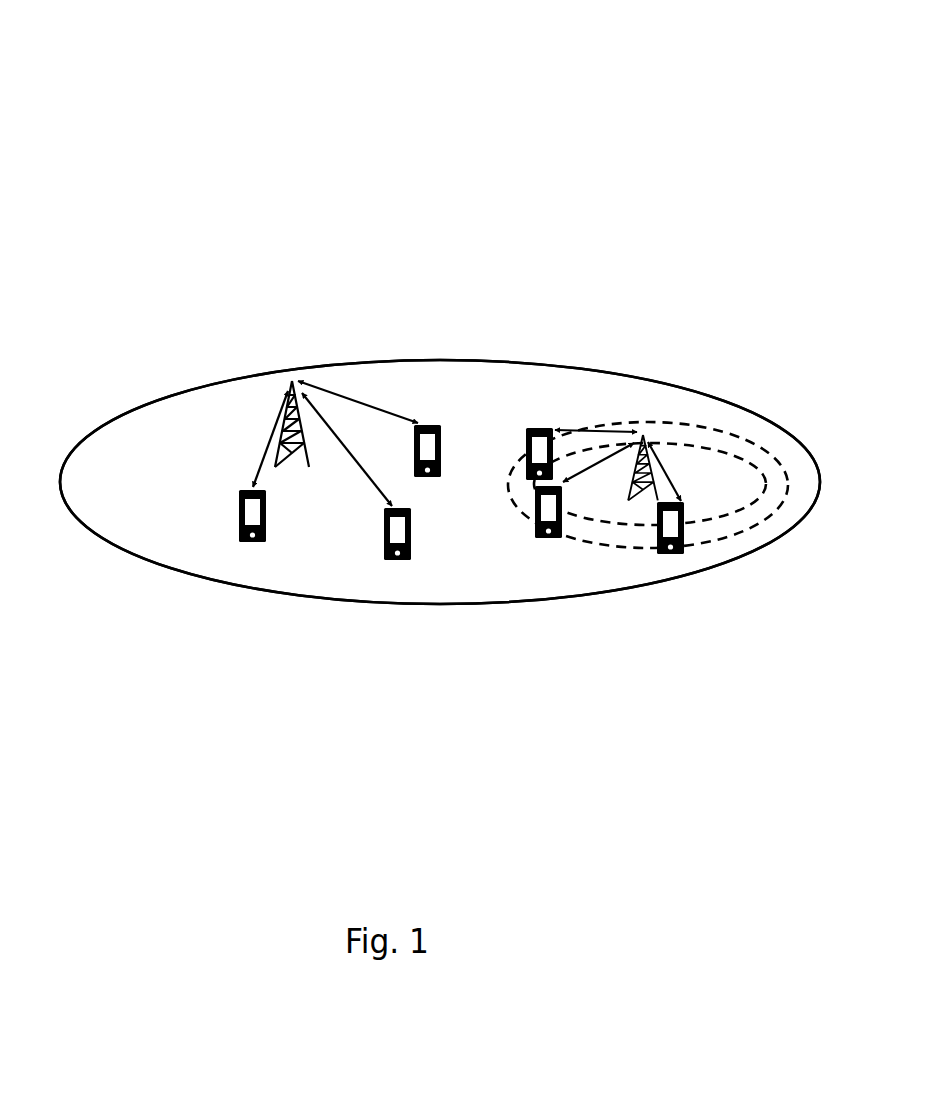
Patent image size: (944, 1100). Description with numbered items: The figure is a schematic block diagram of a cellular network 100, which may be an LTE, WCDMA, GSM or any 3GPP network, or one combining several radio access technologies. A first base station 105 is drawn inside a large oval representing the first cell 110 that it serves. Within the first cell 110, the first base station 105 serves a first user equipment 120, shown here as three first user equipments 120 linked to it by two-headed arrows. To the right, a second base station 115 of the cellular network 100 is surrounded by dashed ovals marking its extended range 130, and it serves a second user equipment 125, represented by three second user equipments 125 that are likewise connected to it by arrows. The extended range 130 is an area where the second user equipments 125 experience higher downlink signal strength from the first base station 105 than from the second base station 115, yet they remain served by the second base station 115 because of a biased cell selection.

The cellular network 100 is at (271, 104).
The first base station 105 is at (292, 380).
The first cell 110 is at (132, 408).
The second base station 115 is at (646, 433).
The first user equipment 120 is at (424, 426).
The second user equipment 125 is at (533, 479).
The extended range 130 is at (738, 453).